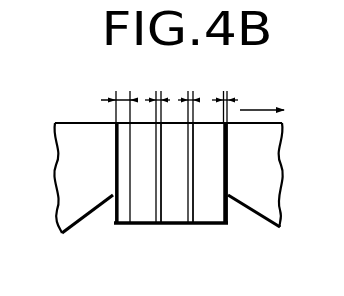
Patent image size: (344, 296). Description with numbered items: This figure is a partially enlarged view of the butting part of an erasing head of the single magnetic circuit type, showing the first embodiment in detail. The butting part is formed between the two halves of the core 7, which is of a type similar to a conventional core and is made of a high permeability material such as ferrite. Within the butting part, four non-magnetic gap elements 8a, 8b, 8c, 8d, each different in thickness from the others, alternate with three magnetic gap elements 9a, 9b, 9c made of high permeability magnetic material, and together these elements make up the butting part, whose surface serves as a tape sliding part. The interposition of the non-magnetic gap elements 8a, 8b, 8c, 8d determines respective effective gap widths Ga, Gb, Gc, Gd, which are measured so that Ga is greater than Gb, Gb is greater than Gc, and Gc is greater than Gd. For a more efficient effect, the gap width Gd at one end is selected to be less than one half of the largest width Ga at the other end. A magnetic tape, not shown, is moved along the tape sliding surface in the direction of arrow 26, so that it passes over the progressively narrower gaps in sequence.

The core 7 is at (70, 177).
The arrow 26 is at (258, 110).
The effective gap width Ga is at (119, 149).
The effective gap width Gb is at (158, 149).
The effective gap width Gc is at (192, 149).
The effective gap width Gd is at (229, 99).
The non-magnetic gap element 8a is at (122, 214).
The non-magnetic gap element 8b is at (163, 214).
The non-magnetic gap element 8c is at (198, 214).
The non-magnetic gap element 8d is at (229, 226).
The magnetic gap element 9a is at (145, 214).
The magnetic gap element 9b is at (183, 214).
The magnetic gap element 9c is at (217, 214).